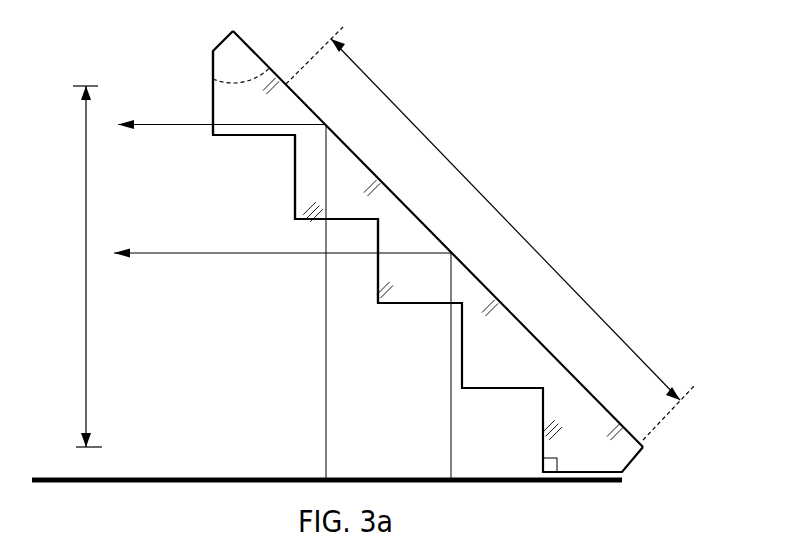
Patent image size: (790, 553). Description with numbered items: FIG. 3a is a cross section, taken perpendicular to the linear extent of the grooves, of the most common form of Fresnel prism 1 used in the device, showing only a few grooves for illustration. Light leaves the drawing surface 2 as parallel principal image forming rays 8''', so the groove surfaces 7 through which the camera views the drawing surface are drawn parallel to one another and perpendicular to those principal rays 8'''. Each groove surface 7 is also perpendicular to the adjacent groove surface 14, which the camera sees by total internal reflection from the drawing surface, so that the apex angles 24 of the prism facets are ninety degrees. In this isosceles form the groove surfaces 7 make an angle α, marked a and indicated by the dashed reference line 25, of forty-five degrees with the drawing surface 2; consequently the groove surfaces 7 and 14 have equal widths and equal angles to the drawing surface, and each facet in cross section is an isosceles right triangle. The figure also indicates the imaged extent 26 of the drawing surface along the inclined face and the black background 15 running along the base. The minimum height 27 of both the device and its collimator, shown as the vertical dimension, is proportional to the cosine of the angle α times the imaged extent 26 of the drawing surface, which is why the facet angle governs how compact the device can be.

The stepped body 1 is at (415, 228).
The drawing surface 2 is at (297, 93).
The groove surfaces 7 is at (212, 103).
The groove surfaces 14 is at (233, 137).
The black background 15 is at (218, 477).
The apex angles 24 is at (552, 458).
The angle α 25 is at (263, 70).
The imaged extent of the drawing surface 26 is at (610, 325).
The minimum height 27 is at (86, 293).
The principal image forming rays of light 8''' is at (282, 189).
The angle α a is at (241, 86).